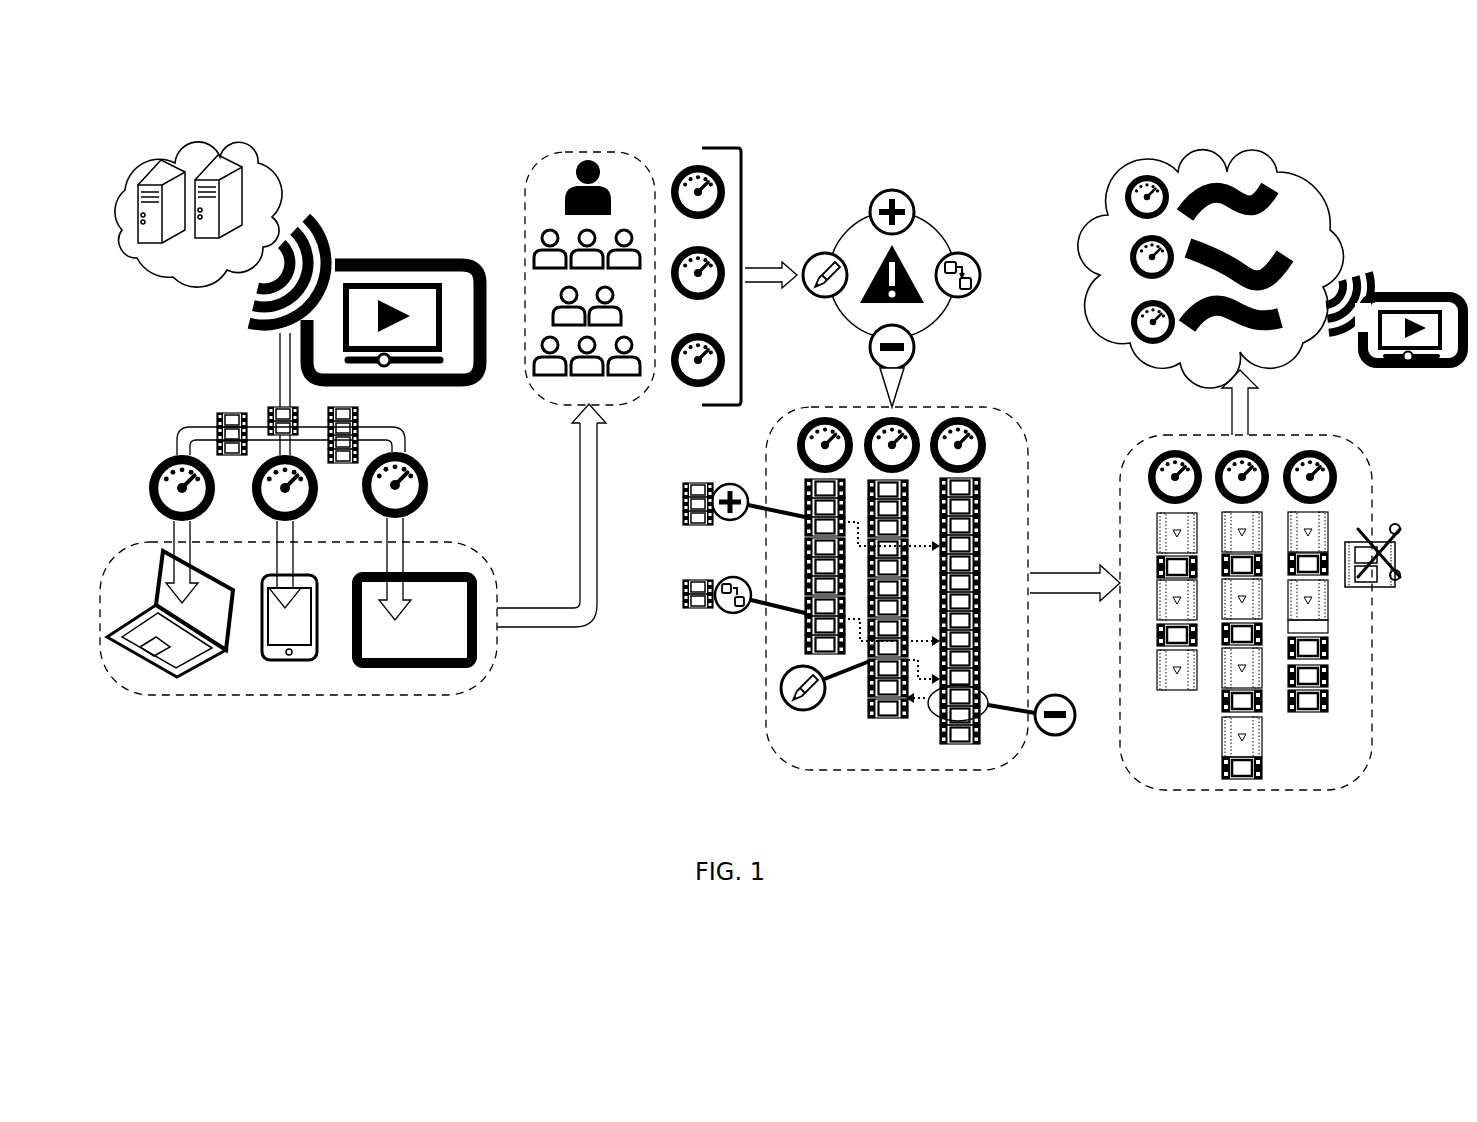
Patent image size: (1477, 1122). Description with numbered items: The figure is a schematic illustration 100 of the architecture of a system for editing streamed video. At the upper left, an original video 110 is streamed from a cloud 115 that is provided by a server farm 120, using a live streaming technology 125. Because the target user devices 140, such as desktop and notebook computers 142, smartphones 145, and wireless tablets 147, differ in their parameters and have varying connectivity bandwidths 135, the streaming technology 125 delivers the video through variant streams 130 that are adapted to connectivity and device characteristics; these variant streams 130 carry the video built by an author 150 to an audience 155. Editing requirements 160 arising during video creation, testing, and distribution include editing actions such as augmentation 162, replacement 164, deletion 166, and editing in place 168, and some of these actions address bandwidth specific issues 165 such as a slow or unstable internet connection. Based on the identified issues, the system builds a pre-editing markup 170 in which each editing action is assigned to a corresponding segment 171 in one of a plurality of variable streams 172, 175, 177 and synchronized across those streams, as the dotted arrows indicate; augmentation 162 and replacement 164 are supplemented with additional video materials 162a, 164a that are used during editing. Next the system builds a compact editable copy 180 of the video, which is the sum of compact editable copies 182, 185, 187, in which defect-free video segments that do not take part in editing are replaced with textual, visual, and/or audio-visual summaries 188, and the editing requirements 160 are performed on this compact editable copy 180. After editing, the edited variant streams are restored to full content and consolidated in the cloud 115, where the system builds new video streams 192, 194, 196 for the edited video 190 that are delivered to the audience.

The schematic illustration 100 is at (1447, 180).
The original video 110 is at (412, 258).
The cloud 115 is at (178, 282).
The server farm 120 is at (153, 252).
The live streaming technology 125 is at (298, 230).
The variant streams 130 is at (227, 412).
The connectivity bandwidths 135 is at (418, 470).
The target user devices 140 is at (240, 697).
The desktop and notebook computers 142 is at (163, 673).
The smartphones 145 is at (295, 664).
The wireless tablets 147 is at (410, 672).
The author 150 is at (565, 198).
The audience 155 is at (535, 246).
The editing requirements 160 is at (842, 230).
The augmentation 162 is at (906, 196).
The additional video materials for augmentation 162a is at (683, 502).
The replacement 164 is at (968, 258).
The additional video materials for replacement 164a is at (683, 605).
The bandwidth specific issues 165 is at (880, 292).
The deletion 166 is at (915, 348).
The editing in place 168 is at (810, 292).
The pre-editing markup 170 is at (778, 742).
The segment 171 is at (805, 500).
The variable stream 172 is at (805, 620).
The variable stream 175 is at (868, 700).
The variable stream 177 is at (945, 740).
The compact editable copy 180 is at (1130, 760).
The compact editable copy 182 is at (1157, 668).
The compact editable copy 185 is at (1222, 722).
The compact editable copy 187 is at (1330, 702).
The summaries 188 is at (1330, 613).
The edited video 190 is at (1412, 292).
The new video stream 192 is at (1275, 186).
The new video stream 194 is at (1292, 250).
The new video stream 196 is at (1270, 340).